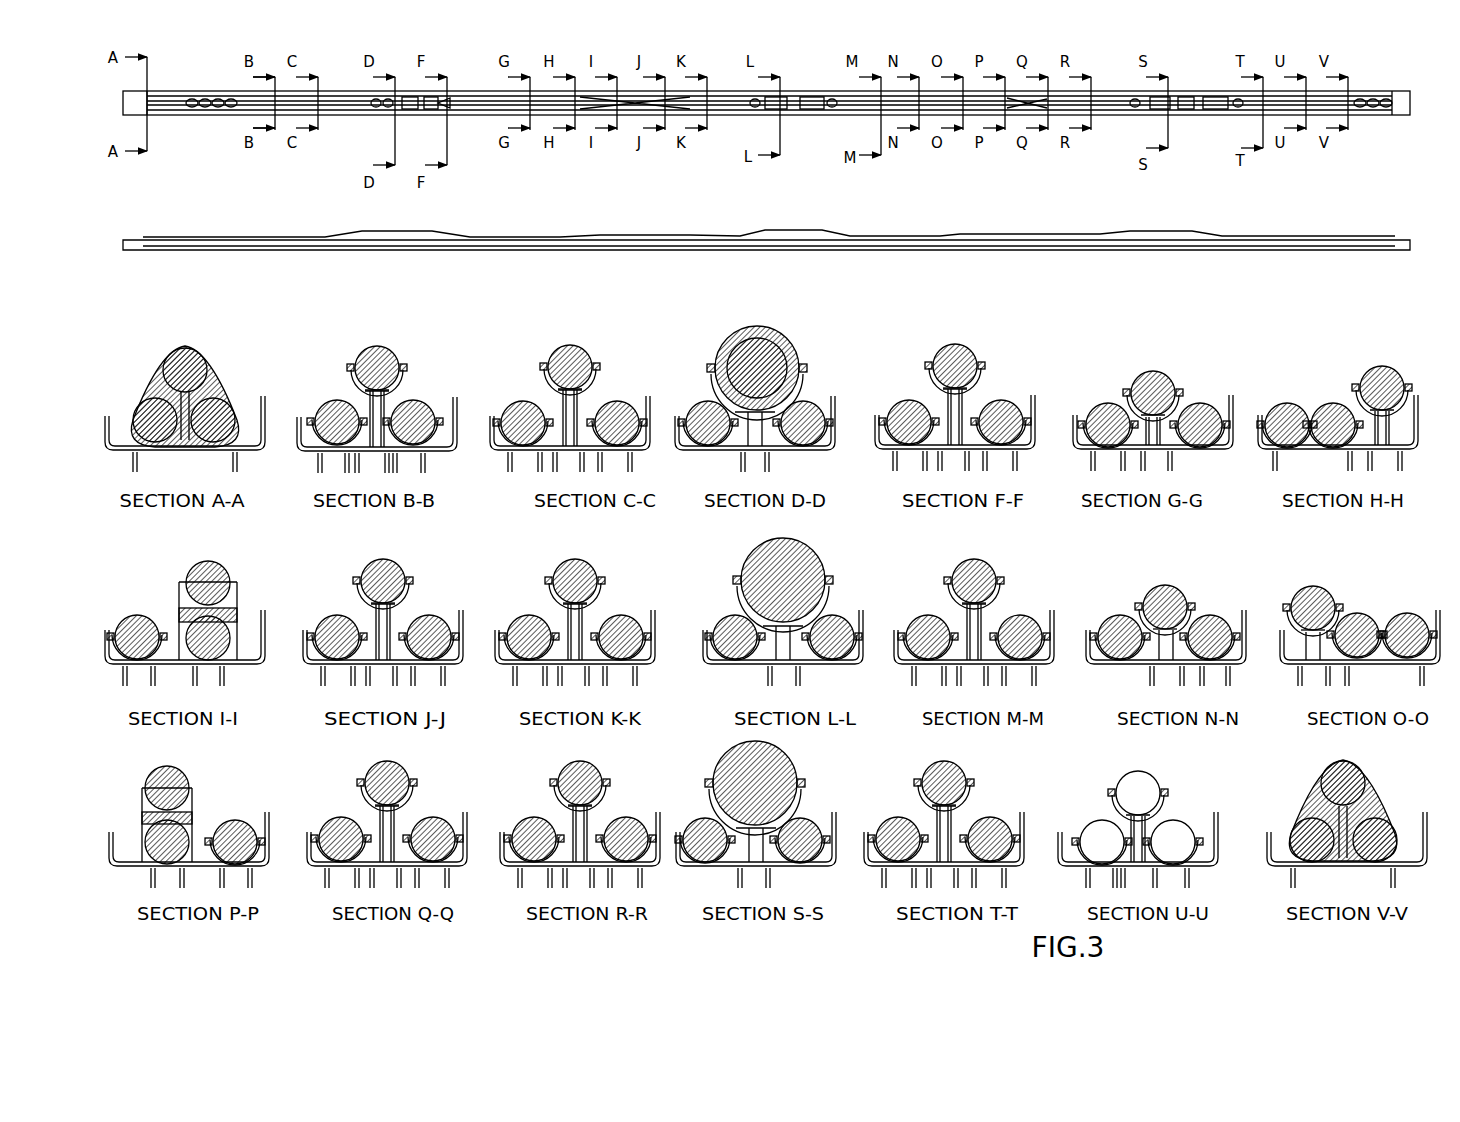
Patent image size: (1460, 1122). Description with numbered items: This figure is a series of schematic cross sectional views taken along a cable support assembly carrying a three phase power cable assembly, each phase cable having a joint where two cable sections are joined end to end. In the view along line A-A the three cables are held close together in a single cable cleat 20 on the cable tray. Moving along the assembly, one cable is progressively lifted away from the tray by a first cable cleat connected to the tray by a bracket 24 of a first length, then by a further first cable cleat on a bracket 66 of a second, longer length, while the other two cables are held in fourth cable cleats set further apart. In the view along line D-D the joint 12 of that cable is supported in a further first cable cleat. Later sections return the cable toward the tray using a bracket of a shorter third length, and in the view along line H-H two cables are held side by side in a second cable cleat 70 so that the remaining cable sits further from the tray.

The joint 12 is at (746, 347).
The cable cleat 20 is at (181, 381).
The bracket 24 is at (420, 403).
The bracket 66 is at (616, 435).
The second cable cleat 70 is at (1326, 455).